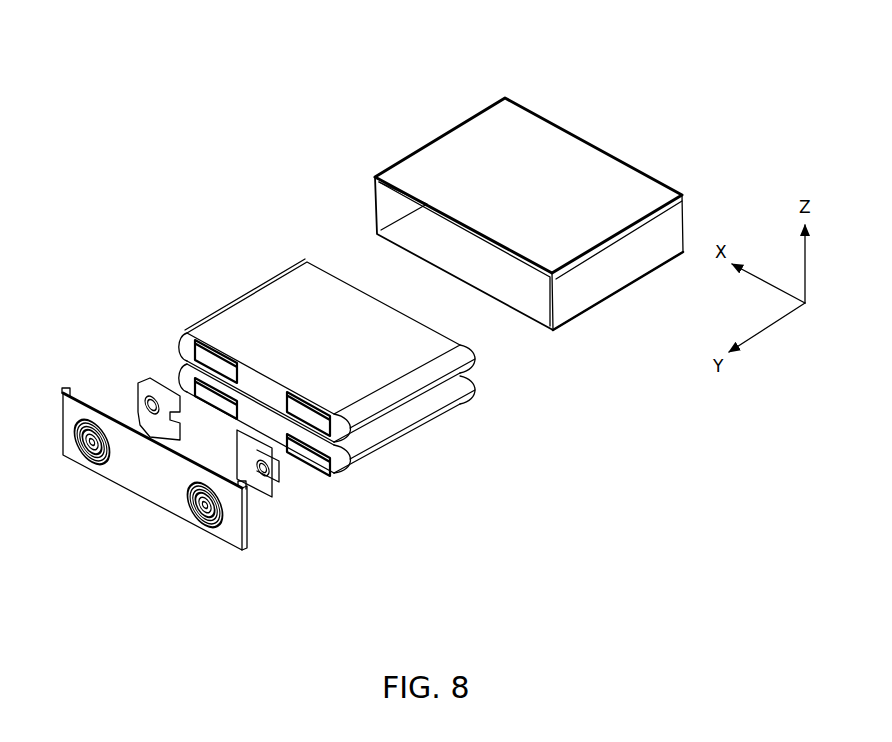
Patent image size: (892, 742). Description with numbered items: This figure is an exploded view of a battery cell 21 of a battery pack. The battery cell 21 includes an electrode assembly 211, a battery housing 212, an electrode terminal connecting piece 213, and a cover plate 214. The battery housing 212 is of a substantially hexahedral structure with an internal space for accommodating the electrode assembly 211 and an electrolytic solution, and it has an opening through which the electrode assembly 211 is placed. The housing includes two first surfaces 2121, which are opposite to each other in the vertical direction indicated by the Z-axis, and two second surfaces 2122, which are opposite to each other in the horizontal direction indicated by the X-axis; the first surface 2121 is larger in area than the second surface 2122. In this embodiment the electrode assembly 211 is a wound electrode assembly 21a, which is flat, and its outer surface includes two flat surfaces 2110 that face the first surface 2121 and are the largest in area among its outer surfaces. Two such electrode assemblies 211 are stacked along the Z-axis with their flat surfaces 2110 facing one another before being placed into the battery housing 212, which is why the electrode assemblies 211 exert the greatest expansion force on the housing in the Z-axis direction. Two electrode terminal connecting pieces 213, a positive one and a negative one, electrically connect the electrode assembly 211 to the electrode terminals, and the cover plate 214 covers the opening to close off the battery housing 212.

The battery cell 21 is at (374, 334).
The electrode assembly 211 is at (290, 385).
The flat surface 2110 is at (277, 310).
The wound electrode assembly 21a is at (183, 352).
The battery housing 212 is at (473, 229).
The first surface 2121 is at (453, 157).
The second surface 2122 is at (588, 288).
The electrode terminal connecting piece 213 is at (138, 378).
The cover plate 214 is at (135, 493).